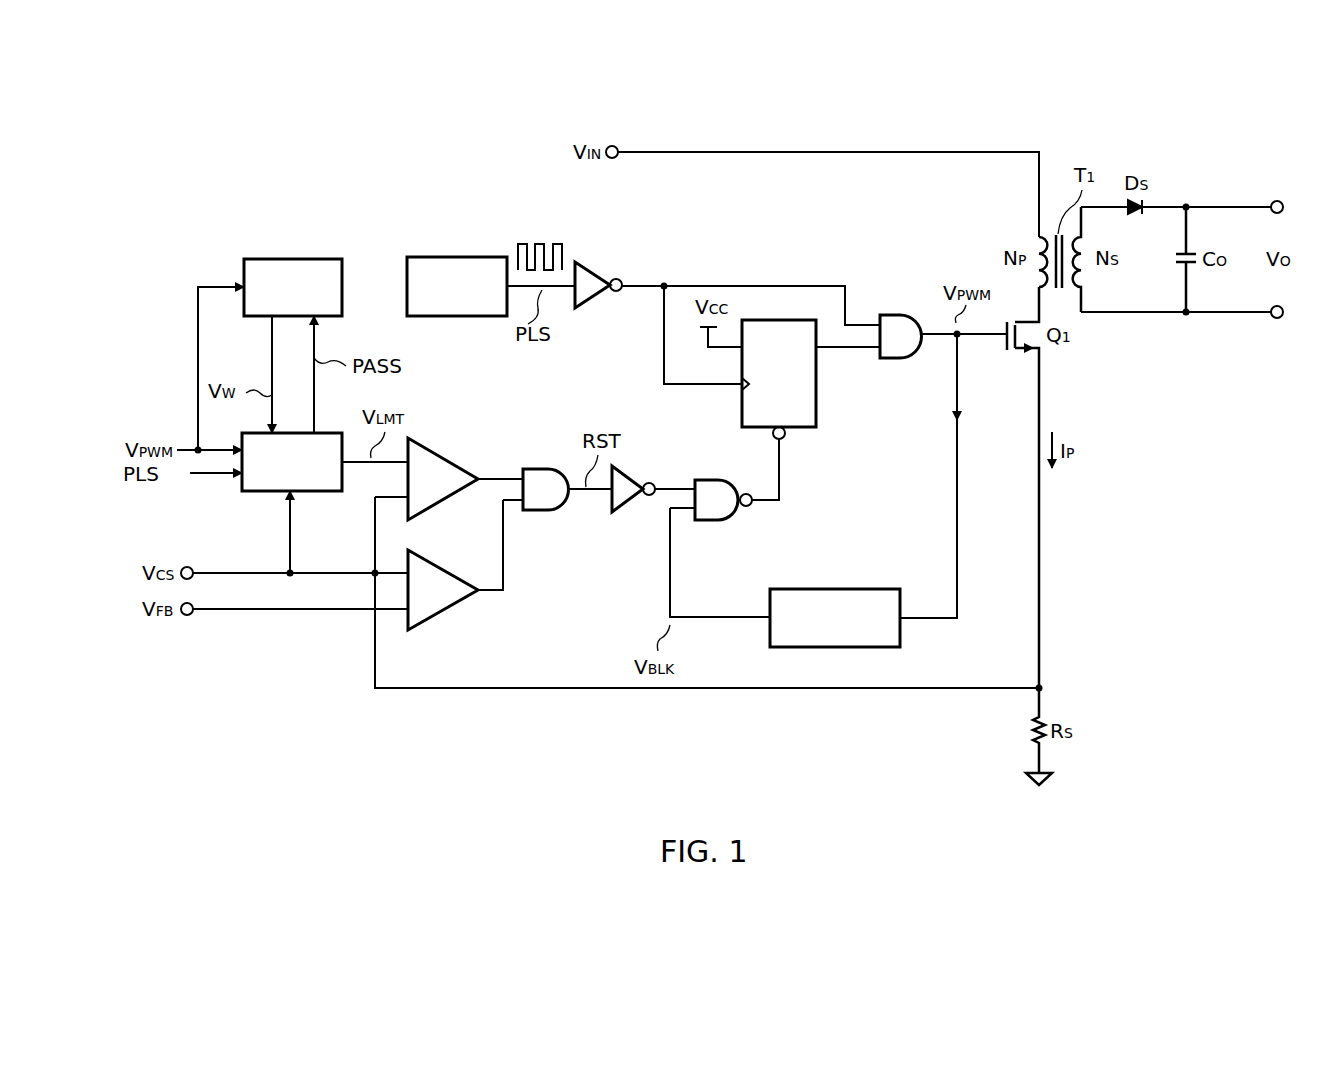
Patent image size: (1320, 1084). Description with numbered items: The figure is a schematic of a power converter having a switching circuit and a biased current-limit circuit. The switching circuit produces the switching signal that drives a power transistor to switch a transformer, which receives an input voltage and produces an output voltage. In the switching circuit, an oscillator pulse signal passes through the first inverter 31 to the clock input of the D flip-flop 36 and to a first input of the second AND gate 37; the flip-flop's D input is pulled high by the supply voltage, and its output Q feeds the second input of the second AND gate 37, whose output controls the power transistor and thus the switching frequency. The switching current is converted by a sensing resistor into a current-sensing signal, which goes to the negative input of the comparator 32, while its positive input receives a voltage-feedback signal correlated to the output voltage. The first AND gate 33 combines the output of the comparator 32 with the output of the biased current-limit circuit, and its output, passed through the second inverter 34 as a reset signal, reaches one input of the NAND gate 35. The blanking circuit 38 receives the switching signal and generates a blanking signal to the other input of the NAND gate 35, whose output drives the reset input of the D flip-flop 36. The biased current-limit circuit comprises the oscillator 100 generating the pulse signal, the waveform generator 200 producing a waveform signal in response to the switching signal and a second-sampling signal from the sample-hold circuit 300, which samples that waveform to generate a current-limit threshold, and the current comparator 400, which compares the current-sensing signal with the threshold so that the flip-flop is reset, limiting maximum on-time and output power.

The oscillator 100 is at (457, 275).
The waveform generator 200 is at (293, 275).
The sample-hold circuit 300 is at (293, 475).
The current comparator 400 is at (447, 478).
The first inverter 31 is at (598, 274).
The comparator 32 is at (443, 588).
The first AND gate 33 is at (546, 475).
The second inverter 34 is at (633, 500).
The NAND gate 35 is at (723, 485).
The D flip-flop 36 is at (779, 363).
The second AND gate 37 is at (901, 321).
The blanking circuit 38 is at (835, 604).